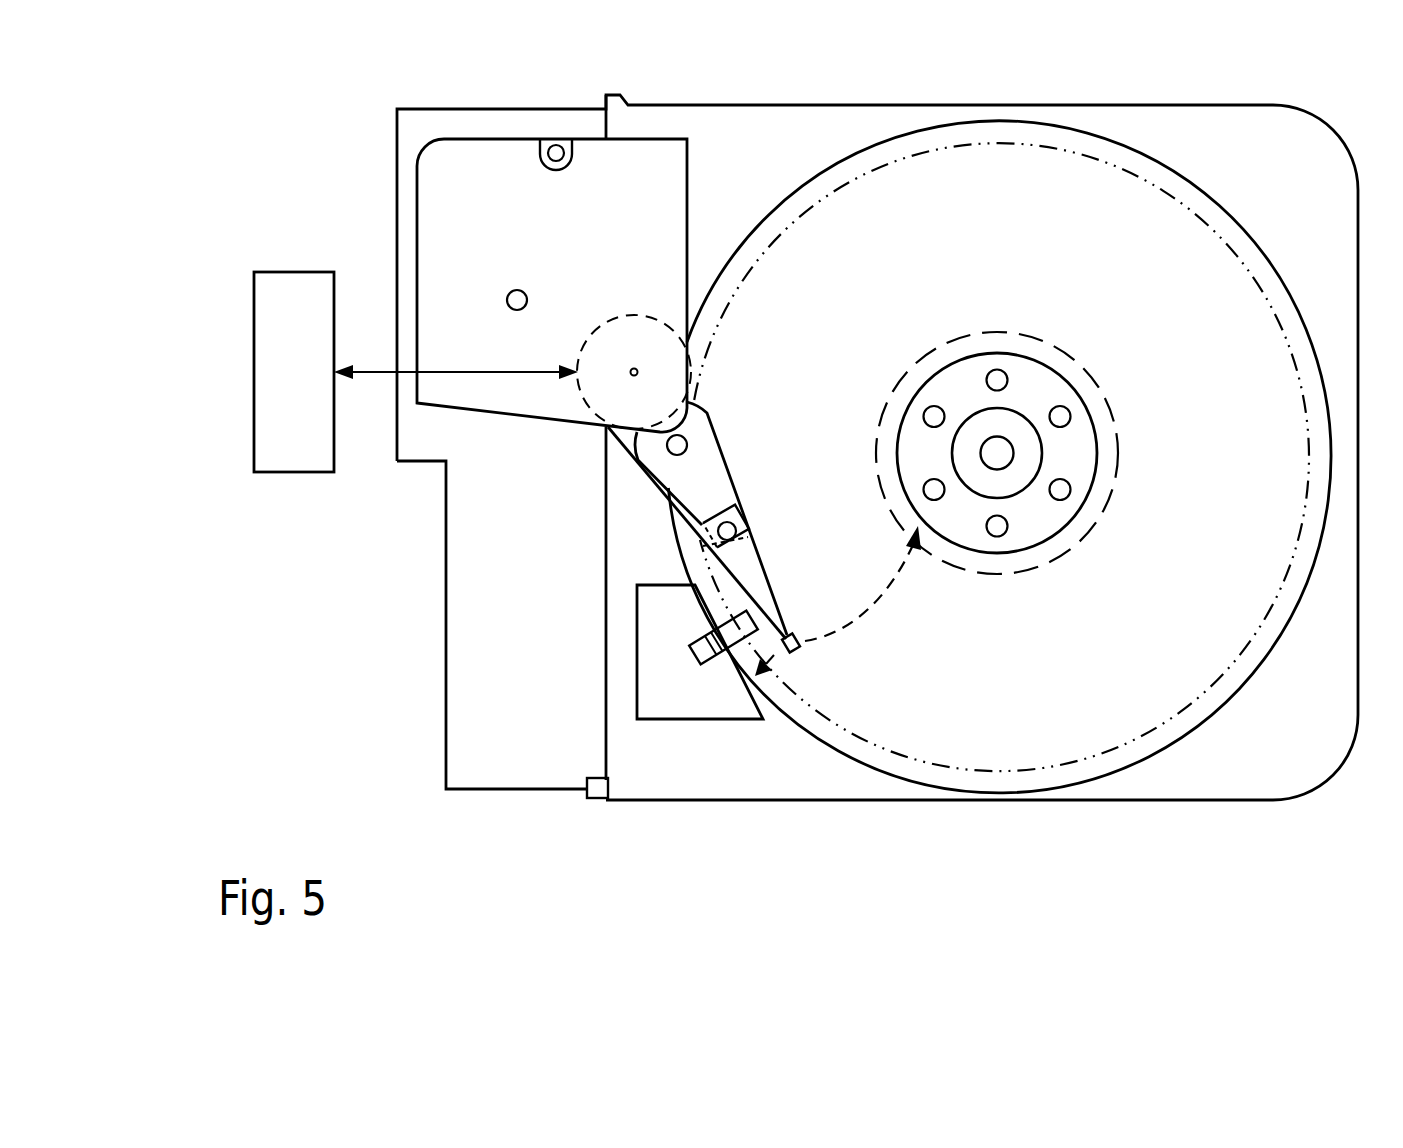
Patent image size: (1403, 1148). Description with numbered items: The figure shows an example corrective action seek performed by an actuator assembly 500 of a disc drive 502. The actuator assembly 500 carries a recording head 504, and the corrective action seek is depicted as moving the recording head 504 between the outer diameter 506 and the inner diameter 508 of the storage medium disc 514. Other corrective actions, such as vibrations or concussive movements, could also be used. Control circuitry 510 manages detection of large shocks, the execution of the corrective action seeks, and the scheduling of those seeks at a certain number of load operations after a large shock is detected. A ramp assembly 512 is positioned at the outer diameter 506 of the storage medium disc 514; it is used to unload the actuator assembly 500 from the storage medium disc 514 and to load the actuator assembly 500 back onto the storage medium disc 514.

The actuator assembly 500 is at (725, 453).
The disc drive 502 is at (282, 767).
The recording head 504 is at (803, 645).
The outer diameter 506 is at (793, 725).
The inner diameter 508 is at (950, 566).
The control circuitry 510 is at (300, 473).
The ramp assembly 512 is at (730, 618).
The storage medium disc 514 is at (1027, 738).